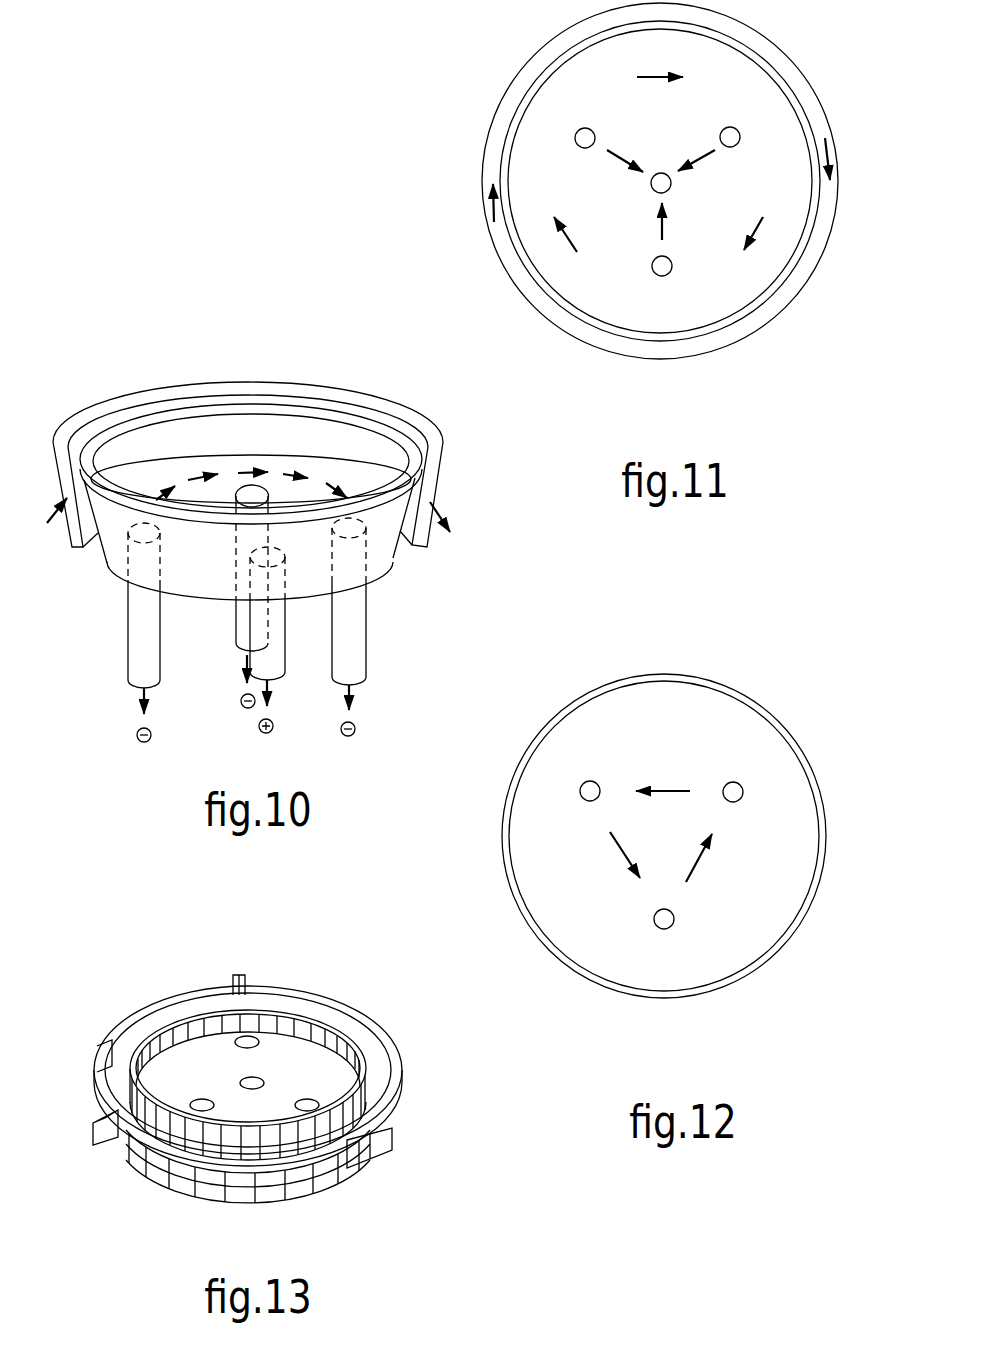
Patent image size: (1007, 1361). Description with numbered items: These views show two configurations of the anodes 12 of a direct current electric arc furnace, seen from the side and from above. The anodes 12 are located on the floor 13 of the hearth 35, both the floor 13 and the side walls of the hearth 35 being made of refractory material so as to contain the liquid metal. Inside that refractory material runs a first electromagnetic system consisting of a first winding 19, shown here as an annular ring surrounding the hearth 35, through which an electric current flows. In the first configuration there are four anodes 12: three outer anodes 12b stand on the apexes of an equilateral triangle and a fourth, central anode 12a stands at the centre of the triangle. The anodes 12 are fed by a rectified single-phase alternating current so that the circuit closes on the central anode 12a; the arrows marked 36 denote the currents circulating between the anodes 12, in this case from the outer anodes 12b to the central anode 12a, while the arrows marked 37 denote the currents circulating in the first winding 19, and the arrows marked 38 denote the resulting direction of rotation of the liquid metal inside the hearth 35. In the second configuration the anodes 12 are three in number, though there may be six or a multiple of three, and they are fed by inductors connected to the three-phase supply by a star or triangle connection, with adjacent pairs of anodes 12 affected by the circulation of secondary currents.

In FIG. 12, the anodes 12 is at (733, 789).
In FIG. 13, the anodes 12 is at (244, 1040).
In FIG. 10, the central anode 12a is at (280, 655).
In FIG. 11, the central anode 12a is at (655, 187).
In FIG. 10, the outer anodes 12b is at (137, 633).
In FIG. 11, the outer anodes 12b is at (733, 135).
In FIG. 10, the floor 13 is at (150, 488).
In FIG. 11, the floor 13 is at (660, 181).
In FIG. 12, the floor 13 is at (650, 708).
In FIG. 10, the first winding 19 is at (188, 390).
In FIG. 11, the first winding 19 is at (818, 248).
In FIG. 13, the first winding 19 is at (367, 1018).
In FIG. 10, the hearth 35 is at (387, 552).
In FIG. 12, the hearth 35 is at (784, 941).
In FIG. 13, the hearth 35 is at (363, 1090).
In FIG. 11, the currents circulating between the anodes 36 is at (620, 147).
In FIG. 12, the currents circulating between the anodes 36 is at (700, 860).
In FIG. 10, the currents circulating in the first winding 37 is at (52, 522).
In FIG. 11, the currents circulating in the first winding 37 is at (836, 152).
In FIG. 10, the direction of rotation of the liquid metal 38 is at (247, 470).
In FIG. 11, the direction of rotation of the liquid metal 38 is at (572, 248).